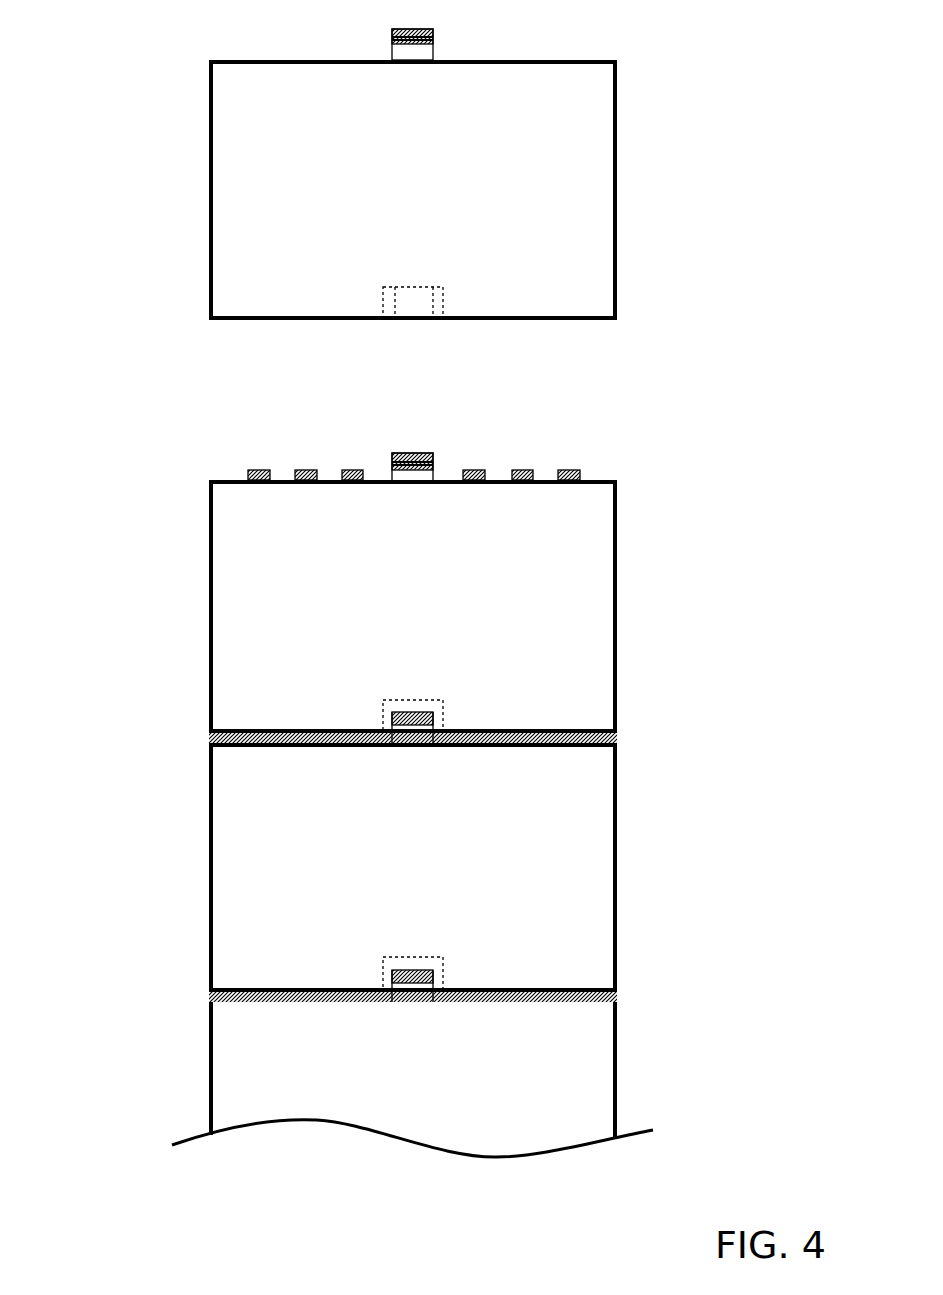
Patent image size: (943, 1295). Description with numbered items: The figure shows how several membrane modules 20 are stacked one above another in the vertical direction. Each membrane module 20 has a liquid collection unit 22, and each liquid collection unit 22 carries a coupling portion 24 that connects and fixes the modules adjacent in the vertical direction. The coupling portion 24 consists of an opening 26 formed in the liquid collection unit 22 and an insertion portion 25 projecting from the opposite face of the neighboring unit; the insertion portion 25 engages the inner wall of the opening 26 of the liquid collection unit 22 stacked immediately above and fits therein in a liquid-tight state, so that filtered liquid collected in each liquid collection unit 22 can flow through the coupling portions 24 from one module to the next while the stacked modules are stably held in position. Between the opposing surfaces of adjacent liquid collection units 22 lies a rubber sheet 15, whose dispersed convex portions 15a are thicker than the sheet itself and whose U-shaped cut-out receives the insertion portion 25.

The rubber sheet 15 is at (597, 482).
The convex portions 15a is at (570, 470).
The membrane module 20 is at (165, 122).
The liquid collection unit 22 is at (209, 187).
The coupling portion 24 is at (321, 503).
The insertion portion 25 is at (433, 48).
The opening 26 is at (383, 292).